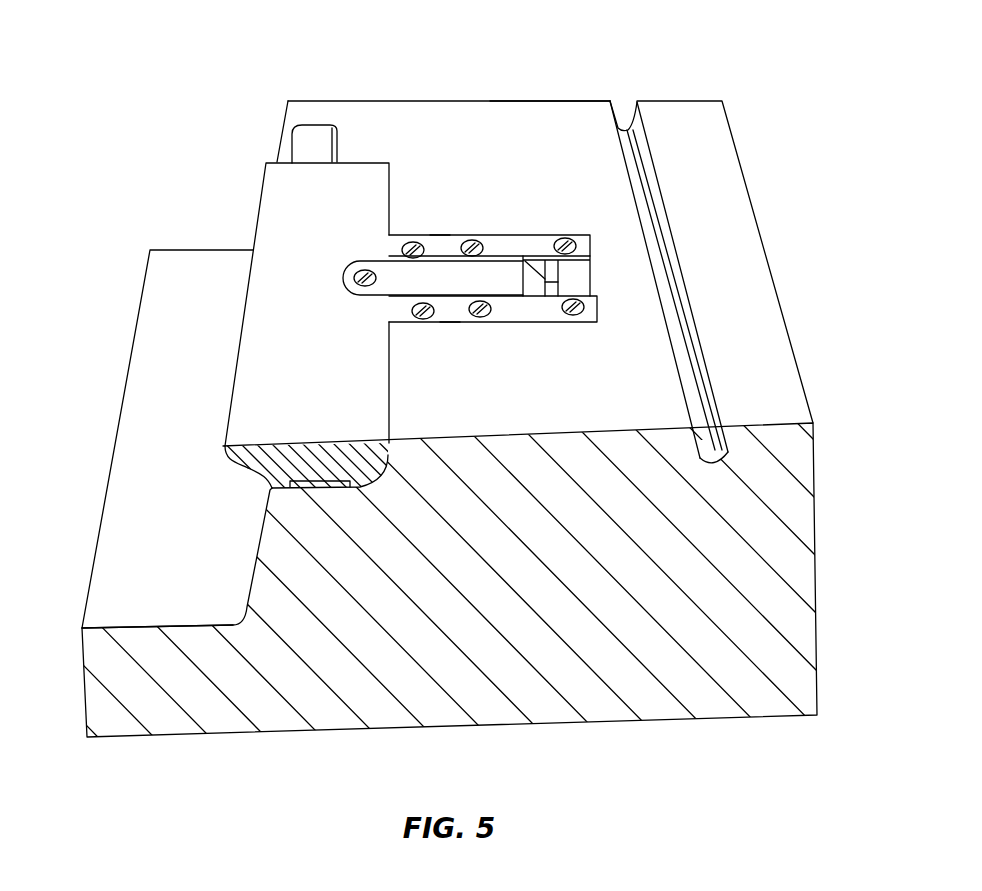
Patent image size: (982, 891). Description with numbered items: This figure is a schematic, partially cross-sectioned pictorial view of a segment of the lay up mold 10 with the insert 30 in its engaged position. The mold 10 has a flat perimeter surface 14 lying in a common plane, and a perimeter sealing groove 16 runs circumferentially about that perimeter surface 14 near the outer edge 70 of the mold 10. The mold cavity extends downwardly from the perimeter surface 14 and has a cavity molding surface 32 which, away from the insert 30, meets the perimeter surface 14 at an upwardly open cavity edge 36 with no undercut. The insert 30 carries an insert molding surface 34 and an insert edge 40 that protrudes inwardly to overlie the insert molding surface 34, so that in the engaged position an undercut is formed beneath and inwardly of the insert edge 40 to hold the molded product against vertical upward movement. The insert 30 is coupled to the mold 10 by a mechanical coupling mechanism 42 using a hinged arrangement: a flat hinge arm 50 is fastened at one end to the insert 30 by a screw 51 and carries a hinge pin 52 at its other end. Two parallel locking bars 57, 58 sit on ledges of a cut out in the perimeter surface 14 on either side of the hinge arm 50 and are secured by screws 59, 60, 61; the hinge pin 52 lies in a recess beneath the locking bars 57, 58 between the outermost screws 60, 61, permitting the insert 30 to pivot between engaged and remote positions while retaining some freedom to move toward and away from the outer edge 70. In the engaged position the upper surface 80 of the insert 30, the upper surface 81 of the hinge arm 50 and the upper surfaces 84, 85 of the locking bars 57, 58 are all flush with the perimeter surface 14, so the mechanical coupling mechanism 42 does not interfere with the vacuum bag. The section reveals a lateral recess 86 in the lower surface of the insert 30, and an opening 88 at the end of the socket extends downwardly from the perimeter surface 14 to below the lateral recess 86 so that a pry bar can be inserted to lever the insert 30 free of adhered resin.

The lay up mold 10 is at (258, 698).
The perimeter surface 14 is at (492, 112).
The perimeter sealing groove 16 is at (622, 108).
The insert 30 is at (272, 216).
The cavity molding surface 32 is at (136, 616).
The insert molding surface 34 is at (228, 478).
The cavity edge 36 is at (283, 117).
The insert edge 40 is at (223, 452).
The mechanical coupling mechanism 42 is at (508, 140).
The hinge arm 50 is at (500, 290).
The screw 51 is at (360, 268).
The hinge pin 52 is at (530, 262).
The locking bar 57 is at (501, 231).
The locking bar 58 is at (549, 308).
The screw 59 is at (413, 240).
The screw 60 is at (472, 240).
The screw 61 is at (566, 240).
The outer edge 70 is at (752, 232).
The upper surface 80 is at (257, 330).
The upper surface 81 is at (387, 285).
The upper surface 84 is at (437, 243).
The upper surface 85 is at (450, 318).
The lateral recess 86 is at (320, 482).
The opening 88 is at (295, 152).